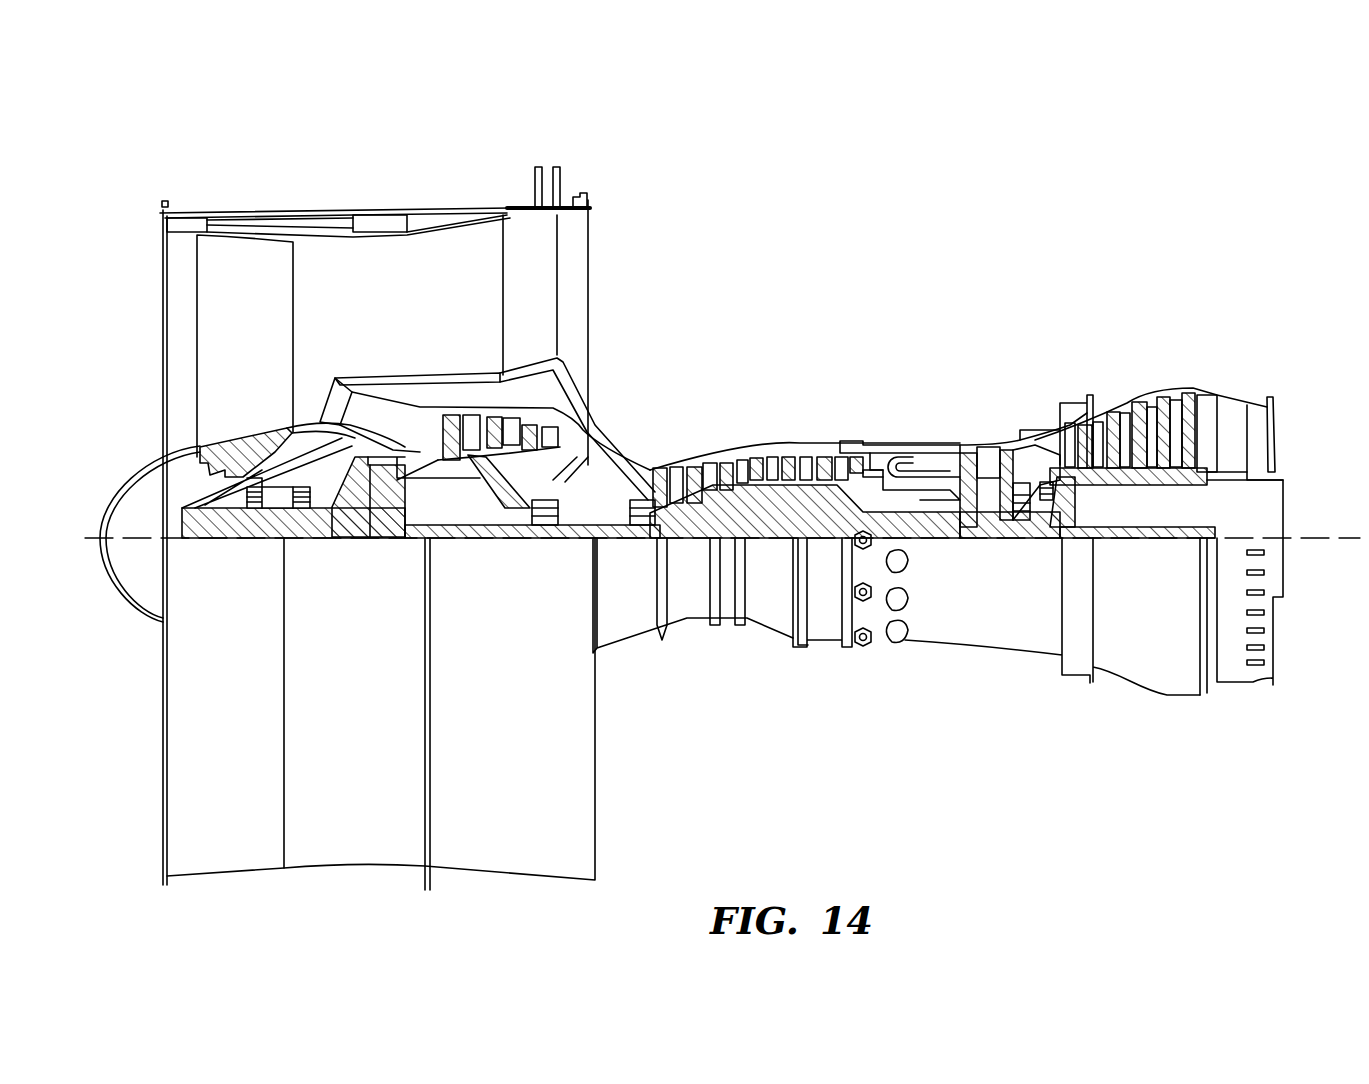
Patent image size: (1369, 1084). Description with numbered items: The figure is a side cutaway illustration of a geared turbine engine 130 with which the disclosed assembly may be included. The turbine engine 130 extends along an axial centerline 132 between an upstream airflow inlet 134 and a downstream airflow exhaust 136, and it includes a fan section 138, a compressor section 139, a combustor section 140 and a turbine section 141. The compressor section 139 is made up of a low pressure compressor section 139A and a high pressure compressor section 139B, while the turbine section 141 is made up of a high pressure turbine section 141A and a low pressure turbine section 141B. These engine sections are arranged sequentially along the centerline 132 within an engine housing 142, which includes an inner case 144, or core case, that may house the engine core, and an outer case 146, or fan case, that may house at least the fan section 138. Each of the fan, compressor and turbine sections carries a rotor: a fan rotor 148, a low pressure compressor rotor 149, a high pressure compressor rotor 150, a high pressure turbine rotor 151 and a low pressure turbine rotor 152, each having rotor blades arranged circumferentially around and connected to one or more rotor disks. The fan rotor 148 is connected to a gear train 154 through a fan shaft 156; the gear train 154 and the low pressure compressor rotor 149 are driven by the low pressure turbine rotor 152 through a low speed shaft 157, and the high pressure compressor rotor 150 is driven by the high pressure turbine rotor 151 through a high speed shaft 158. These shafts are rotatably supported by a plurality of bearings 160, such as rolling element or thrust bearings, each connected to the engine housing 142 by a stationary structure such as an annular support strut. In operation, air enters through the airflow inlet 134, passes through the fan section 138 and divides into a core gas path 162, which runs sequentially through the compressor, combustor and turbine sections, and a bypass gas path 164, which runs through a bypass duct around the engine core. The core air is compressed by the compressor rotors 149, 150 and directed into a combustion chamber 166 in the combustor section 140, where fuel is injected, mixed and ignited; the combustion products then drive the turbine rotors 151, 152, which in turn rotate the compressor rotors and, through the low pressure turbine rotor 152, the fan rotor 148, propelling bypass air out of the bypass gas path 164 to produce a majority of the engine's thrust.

The geared turbine engine 130 is at (128, 185).
The axial centerline 132 is at (1335, 545).
The upstream airflow inlet 134 is at (160, 290).
The downstream airflow exhaust 136 is at (1275, 428).
The fan section 138 is at (340, 183).
The compressor section 139 is at (418, 122).
The low pressure compressor section 139A is at (592, 168).
The high pressure compressor section 139B is at (822, 370).
The combustor section 140 is at (955, 370).
The turbine section 141 is at (960, 297).
The high pressure turbine section 141A is at (1040, 370).
The low pressure turbine section 141B is at (1230, 370).
The engine housing 142 is at (620, 668).
The inner case 144 is at (820, 640).
The outer case 146 is at (540, 880).
The fan rotor 148 is at (165, 447).
The low pressure compressor rotor 149 is at (490, 480).
The high pressure compressor rotor 150 is at (772, 490).
The high pressure turbine rotor 151 is at (985, 505).
The low pressure turbine rotor 152 is at (1137, 485).
The gear train 154 is at (380, 540).
The fan shaft 156 is at (235, 540).
The low speed shaft 157 is at (1150, 540).
The high speed shaft 158 is at (910, 540).
The bearings 160 is at (297, 508).
The core gas path 162 is at (615, 462).
The bypass gas path 164 is at (424, 312).
The combustion chamber 166 is at (905, 468).